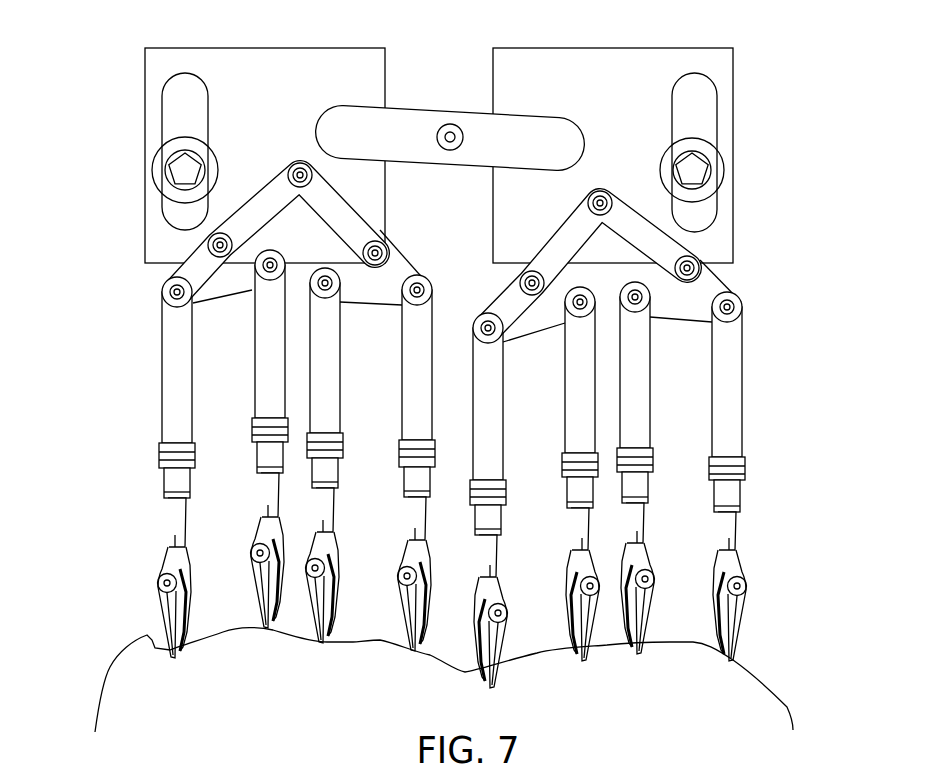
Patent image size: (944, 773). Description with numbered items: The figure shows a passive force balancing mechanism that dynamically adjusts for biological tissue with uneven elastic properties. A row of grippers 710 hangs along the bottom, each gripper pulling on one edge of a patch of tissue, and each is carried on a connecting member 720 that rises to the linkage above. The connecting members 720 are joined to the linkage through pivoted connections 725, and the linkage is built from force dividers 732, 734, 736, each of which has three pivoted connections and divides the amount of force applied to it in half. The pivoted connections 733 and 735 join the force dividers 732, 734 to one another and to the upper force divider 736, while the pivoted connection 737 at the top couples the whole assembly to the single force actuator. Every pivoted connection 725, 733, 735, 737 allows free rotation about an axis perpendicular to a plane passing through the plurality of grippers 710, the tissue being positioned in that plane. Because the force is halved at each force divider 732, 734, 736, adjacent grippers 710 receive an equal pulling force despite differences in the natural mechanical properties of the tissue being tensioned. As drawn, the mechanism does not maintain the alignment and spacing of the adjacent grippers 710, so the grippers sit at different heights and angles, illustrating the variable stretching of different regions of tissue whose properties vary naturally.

The grippers 710 is at (163, 608).
The gripper connecting members 720 is at (174, 376).
The pivoted connection 725 is at (417, 278).
The force divider 732 is at (218, 292).
The pivoted connection 733 is at (204, 245).
The force divider 734 is at (244, 212).
The pivoted connection 735 is at (298, 172).
The force divider 736 is at (312, 148).
The pivoted connection 737 is at (450, 124).